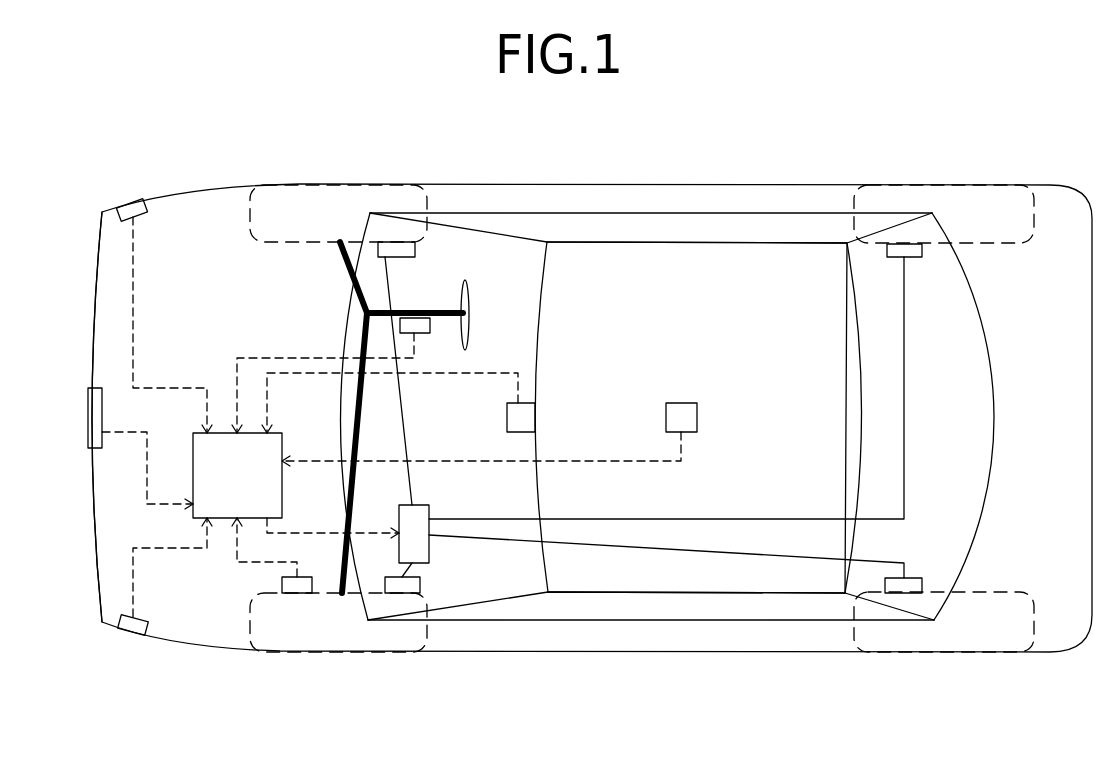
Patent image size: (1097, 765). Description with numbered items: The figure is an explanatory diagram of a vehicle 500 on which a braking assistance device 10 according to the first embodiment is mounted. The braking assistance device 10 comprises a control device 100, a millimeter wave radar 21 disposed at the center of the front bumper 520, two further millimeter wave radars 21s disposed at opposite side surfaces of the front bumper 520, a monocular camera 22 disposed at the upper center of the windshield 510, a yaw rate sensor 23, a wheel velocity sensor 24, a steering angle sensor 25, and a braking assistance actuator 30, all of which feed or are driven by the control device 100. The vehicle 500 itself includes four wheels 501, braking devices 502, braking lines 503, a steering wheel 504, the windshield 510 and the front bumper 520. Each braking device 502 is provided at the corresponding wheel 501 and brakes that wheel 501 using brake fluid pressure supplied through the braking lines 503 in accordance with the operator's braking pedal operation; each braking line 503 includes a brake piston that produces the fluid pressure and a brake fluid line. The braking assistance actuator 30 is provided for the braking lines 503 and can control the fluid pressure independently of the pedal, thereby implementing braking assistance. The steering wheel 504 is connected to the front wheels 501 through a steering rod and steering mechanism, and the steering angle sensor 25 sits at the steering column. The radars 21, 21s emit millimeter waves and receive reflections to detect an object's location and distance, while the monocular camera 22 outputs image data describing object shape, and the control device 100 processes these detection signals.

The braking assistance device 10 is at (83, 623).
The millimeter wave radar 21 is at (93, 418).
The millimeter wave radars 21s is at (127, 202).
The monocular camera 22 is at (401, 403).
The yaw rate sensor 23 is at (489, 432).
The wheel velocity sensor 24 is at (282, 580).
The steering angle sensor 25 is at (427, 333).
The braking assistance actuator 30 is at (348, 534).
The control device 100 is at (237, 475).
The vehicle 500 is at (667, 172).
The wheels 501 is at (340, 205).
The braking devices 502 is at (410, 252).
The braking lines 503 is at (412, 495).
The steering wheel 504 is at (468, 283).
The windshield 510 is at (517, 345).
The front bumper 520 is at (93, 286).